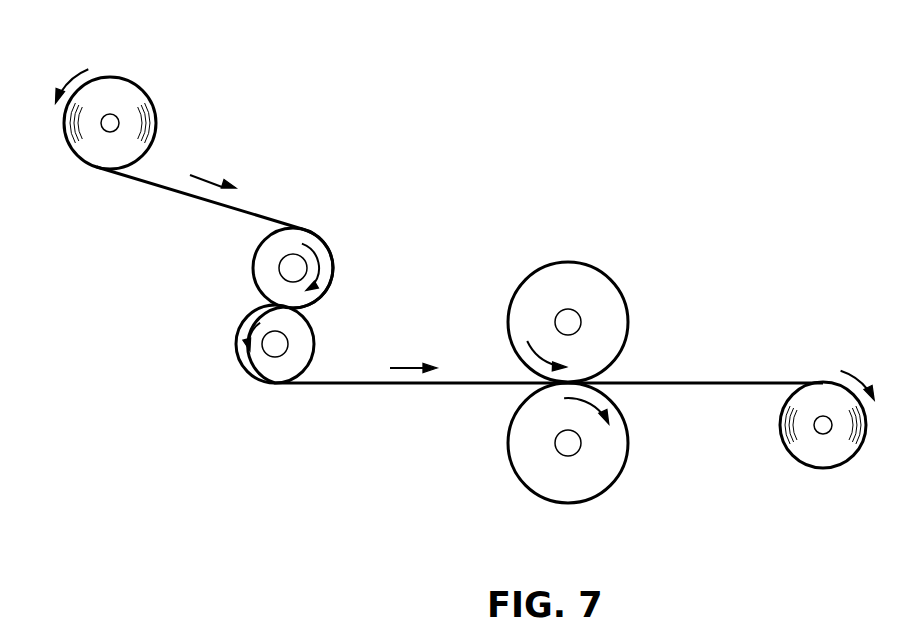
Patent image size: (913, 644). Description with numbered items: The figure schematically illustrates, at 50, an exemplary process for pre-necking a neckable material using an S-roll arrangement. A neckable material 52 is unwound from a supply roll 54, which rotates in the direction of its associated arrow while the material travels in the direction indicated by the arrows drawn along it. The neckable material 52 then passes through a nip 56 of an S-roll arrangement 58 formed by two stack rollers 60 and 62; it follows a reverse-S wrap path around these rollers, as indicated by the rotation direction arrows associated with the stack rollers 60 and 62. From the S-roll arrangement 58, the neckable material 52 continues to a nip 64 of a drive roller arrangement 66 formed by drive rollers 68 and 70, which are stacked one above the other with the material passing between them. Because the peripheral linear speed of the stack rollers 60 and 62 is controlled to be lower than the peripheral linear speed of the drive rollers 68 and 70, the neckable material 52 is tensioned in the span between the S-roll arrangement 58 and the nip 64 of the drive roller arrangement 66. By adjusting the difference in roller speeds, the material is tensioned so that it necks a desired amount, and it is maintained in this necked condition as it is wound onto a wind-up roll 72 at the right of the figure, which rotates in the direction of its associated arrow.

The process for pre-necking a neckable material 50 is at (712, 80).
The neckable material 52 is at (203, 200).
The supply roll 54 is at (152, 100).
The nip 56 is at (310, 315).
The S-roll arrangement 58 is at (257, 298).
The stack roller 60 is at (332, 252).
The stack roller 62 is at (308, 342).
The nip 64 is at (530, 375).
The drive roller arrangement 66 is at (670, 308).
The drive roller 68 is at (603, 282).
The drive roller 70 is at (578, 488).
The wind-up roll 72 is at (798, 452).